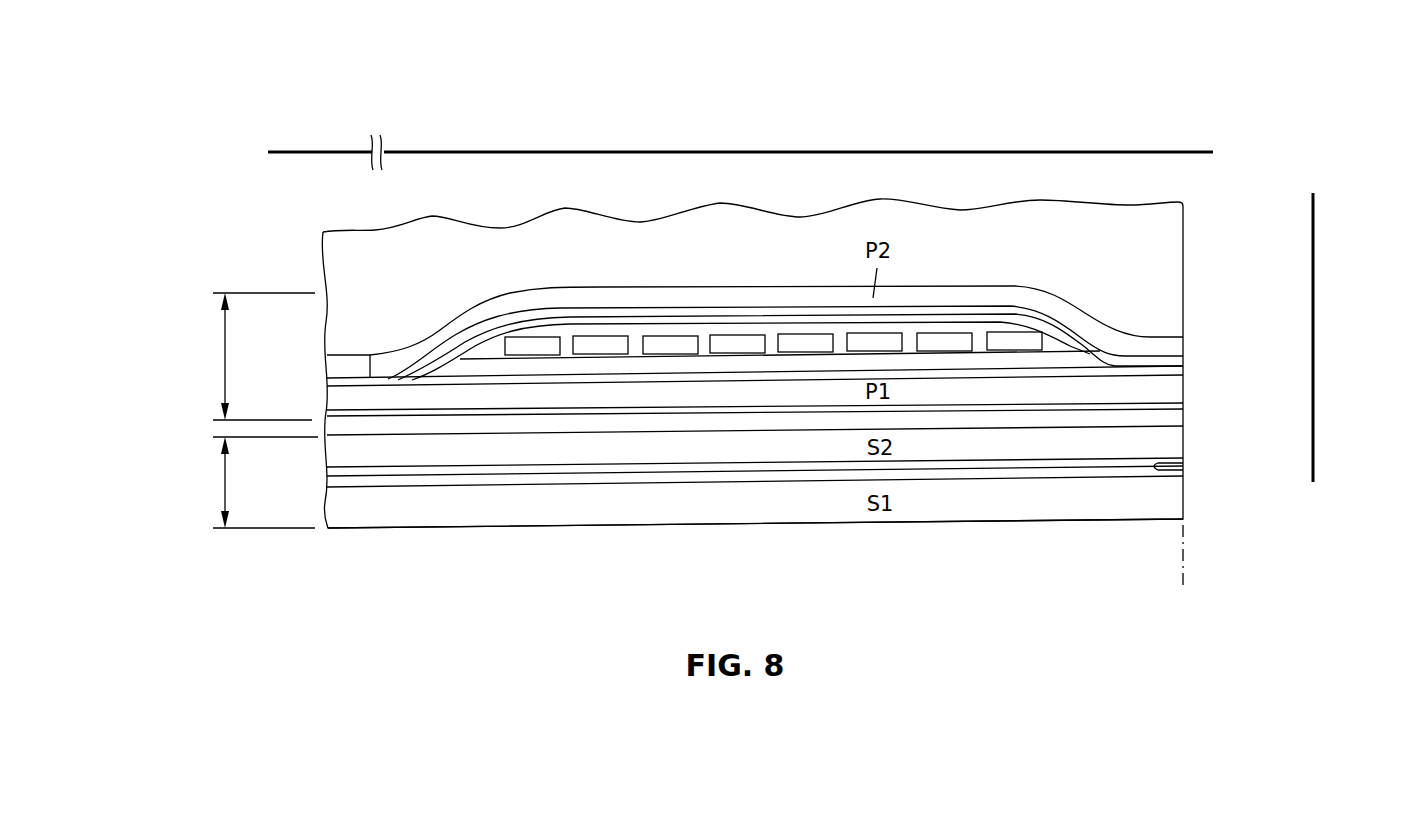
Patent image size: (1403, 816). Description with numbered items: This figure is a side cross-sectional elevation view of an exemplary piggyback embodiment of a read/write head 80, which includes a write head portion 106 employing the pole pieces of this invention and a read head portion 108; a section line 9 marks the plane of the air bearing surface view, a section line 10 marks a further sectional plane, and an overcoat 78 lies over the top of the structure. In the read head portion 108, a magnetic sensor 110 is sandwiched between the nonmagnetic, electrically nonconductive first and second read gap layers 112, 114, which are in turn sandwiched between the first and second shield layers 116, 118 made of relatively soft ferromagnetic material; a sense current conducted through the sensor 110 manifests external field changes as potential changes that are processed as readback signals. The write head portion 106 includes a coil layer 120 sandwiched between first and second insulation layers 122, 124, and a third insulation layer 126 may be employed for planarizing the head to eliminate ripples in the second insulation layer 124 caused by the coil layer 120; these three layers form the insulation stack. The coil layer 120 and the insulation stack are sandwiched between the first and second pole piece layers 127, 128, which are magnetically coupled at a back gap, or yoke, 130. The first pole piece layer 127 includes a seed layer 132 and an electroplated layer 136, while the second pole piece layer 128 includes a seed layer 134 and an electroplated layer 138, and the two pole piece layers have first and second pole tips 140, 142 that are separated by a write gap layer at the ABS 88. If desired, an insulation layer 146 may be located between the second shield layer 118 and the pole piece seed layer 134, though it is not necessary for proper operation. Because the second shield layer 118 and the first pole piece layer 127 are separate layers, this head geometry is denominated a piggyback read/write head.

The section line 10- 10 is at (1213, 138).
The section line 9- 9 is at (1328, 470).
The read/write head 80 is at (300, 240).
The overcoat layer 78 is at (1175, 233).
The electroplated layer 136 is at (1124, 340).
The seed layer 132 is at (1008, 306).
The second insulation layer 124 is at (1060, 343).
The third insulation layer 126 is at (573, 322).
The back gap (yoke) 130 is at (368, 378).
The coil layer 120 is at (803, 340).
The first insulation layer 122 is at (700, 365).
The second pole piece layer 128 is at (320, 355).
The electroplated layer 138 is at (1102, 393).
The first pole piece layer 127 is at (320, 388).
The seed layer 134 is at (655, 412).
The insulation layer 146 is at (980, 423).
The second read gap layer 114 is at (785, 457).
The second shield layer 118 is at (1047, 452).
The first read gap layer 112 is at (825, 482).
The first shield layer 116 is at (923, 510).
The magnetic sensor 110 is at (1183, 466).
The second pole tip 142 is at (1188, 335).
The first pole tip 140 is at (1188, 375).
The write head portion 106 is at (225, 362).
The read head portion 108 is at (225, 488).
The ABS 88 is at (1183, 578).